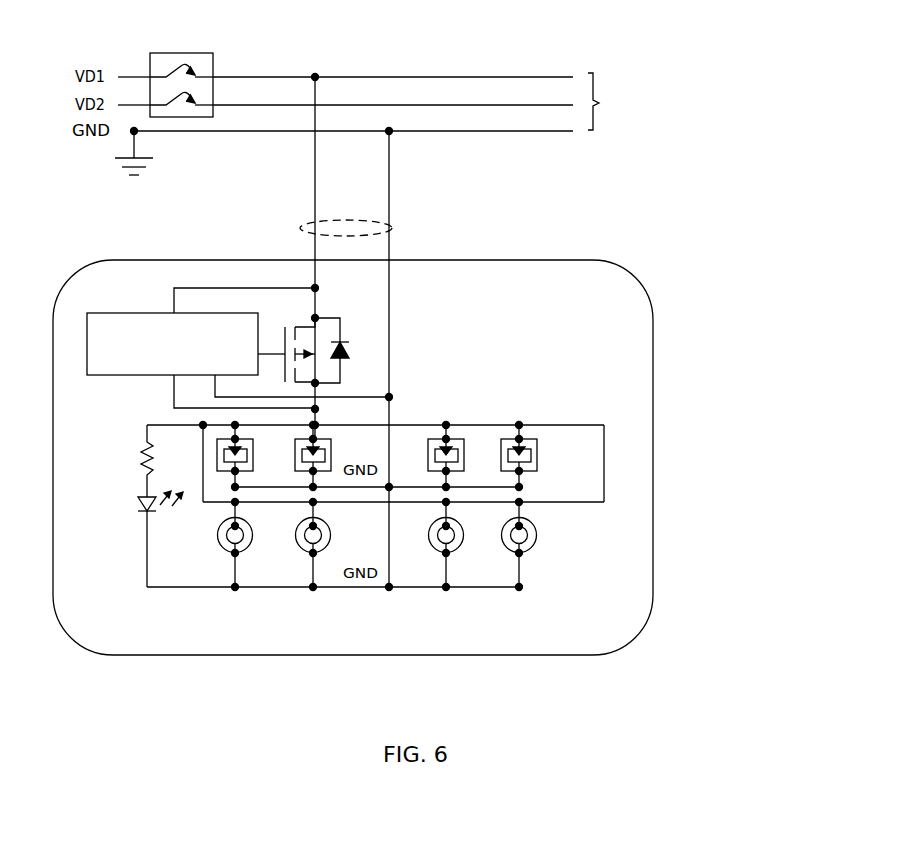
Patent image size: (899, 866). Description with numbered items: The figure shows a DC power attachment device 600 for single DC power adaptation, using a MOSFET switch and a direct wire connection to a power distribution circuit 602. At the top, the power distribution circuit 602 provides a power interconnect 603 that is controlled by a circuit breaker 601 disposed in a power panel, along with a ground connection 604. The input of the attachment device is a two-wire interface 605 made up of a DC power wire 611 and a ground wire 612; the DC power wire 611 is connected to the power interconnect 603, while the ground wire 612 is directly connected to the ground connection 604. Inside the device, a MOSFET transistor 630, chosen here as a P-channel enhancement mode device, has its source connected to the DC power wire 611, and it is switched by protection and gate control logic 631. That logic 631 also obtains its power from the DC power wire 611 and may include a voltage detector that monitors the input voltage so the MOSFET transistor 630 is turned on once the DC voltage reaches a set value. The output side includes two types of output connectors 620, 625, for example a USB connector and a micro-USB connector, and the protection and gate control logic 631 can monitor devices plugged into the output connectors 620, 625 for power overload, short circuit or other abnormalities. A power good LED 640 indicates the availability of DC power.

The DC power attachment device 600 is at (630, 270).
The circuit breaker 601 is at (171, 64).
The power distribution circuit 602 is at (675, 101).
The power interconnect 603 is at (408, 74).
The ground connection 604 is at (413, 133).
The two-wire interface 605 is at (395, 224).
The DC power wire 611 is at (312, 207).
The ground wire 612 is at (391, 192).
The output connector 620 is at (537, 457).
The output connector 625 is at (540, 540).
The MOSFET transistor 630 is at (297, 318).
The protection and gate control logic 631 is at (240, 349).
The power good LED 640 is at (110, 506).